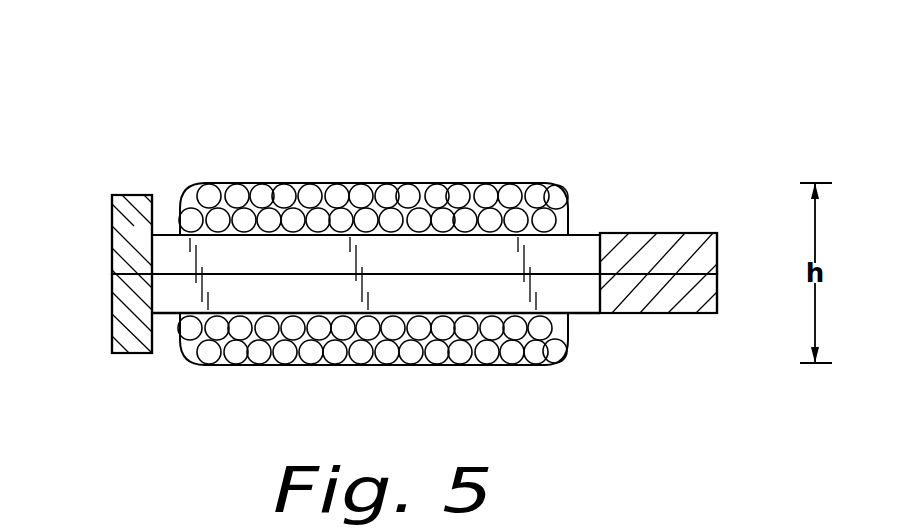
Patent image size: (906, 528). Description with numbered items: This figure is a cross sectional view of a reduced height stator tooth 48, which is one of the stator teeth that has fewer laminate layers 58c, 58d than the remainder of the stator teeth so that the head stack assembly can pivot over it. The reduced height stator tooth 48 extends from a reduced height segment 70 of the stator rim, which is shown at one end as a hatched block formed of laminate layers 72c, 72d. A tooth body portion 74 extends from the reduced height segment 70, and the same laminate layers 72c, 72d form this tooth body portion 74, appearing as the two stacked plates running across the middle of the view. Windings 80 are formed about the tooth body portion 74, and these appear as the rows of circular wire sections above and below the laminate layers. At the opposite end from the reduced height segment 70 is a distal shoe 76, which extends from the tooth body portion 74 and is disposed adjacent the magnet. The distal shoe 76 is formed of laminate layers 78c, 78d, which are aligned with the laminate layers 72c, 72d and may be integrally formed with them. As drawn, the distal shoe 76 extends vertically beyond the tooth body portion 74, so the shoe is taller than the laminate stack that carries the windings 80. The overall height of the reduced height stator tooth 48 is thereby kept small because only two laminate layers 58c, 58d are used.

The reduced height stator tooth 48 is at (113, 375).
The laminate layer 58c is at (376, 259).
The laminate layer 58d is at (376, 290).
The reduced height segment 70 is at (600, 226).
The laminate layer 72c is at (718, 256).
The laminate layer 72d is at (718, 292).
The tooth body portion 74 is at (375, 236).
The distal shoe 76 is at (112, 190).
The laminate layer 78c is at (112, 246).
The laminate layer 78d is at (112, 312).
The windings 80 is at (373, 260).